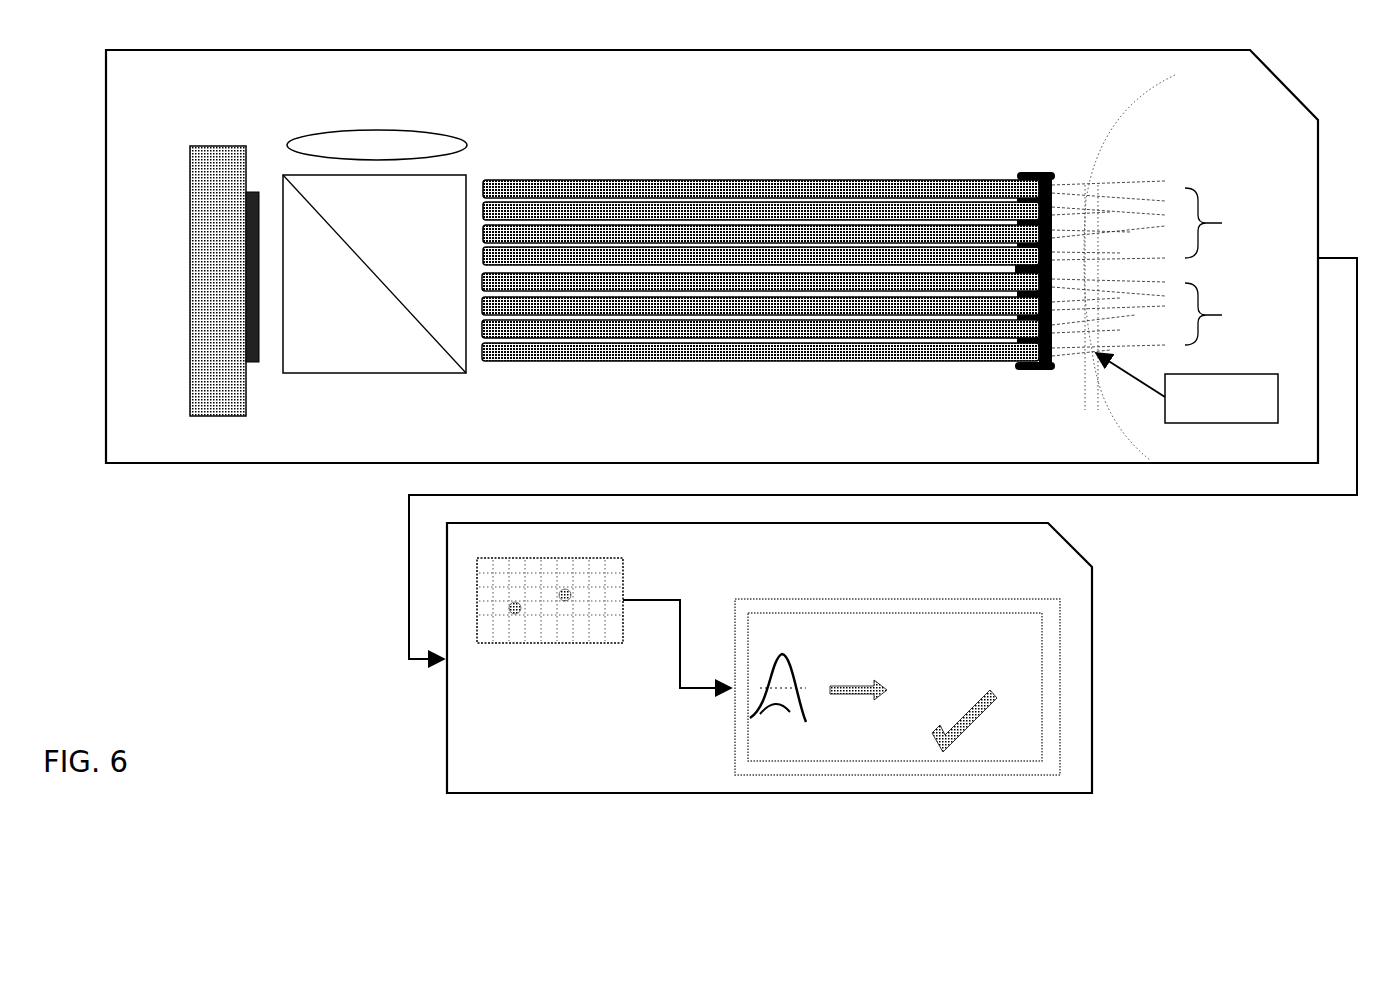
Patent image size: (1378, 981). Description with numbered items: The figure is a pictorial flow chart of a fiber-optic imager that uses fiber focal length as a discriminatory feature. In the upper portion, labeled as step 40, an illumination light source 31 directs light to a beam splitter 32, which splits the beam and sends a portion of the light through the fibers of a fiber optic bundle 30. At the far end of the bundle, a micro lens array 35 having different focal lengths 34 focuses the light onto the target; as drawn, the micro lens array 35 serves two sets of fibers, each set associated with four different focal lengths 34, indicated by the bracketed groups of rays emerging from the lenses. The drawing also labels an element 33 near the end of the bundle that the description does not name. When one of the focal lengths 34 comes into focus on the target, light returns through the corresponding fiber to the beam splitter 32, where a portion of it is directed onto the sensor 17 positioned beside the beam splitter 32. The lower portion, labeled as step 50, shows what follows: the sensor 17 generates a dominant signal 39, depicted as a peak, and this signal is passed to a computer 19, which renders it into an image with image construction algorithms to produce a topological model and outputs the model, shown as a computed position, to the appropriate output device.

The sensor 17 is at (200, 146).
The computer 19 is at (978, 598).
The fiber optic bundle 30 is at (636, 362).
The illumination light source 31 is at (452, 132).
The beam splitter 32 is at (406, 370).
The distal end of fiber bundle 33 is at (1060, 362).
The different focal lengths 34 is at (1165, 267).
The micro lens array 35 is at (1034, 166).
The dominant signal 39 is at (778, 697).
The illumination step 40 is at (1072, 92).
The sensing and image construction step 50 is at (1035, 569).